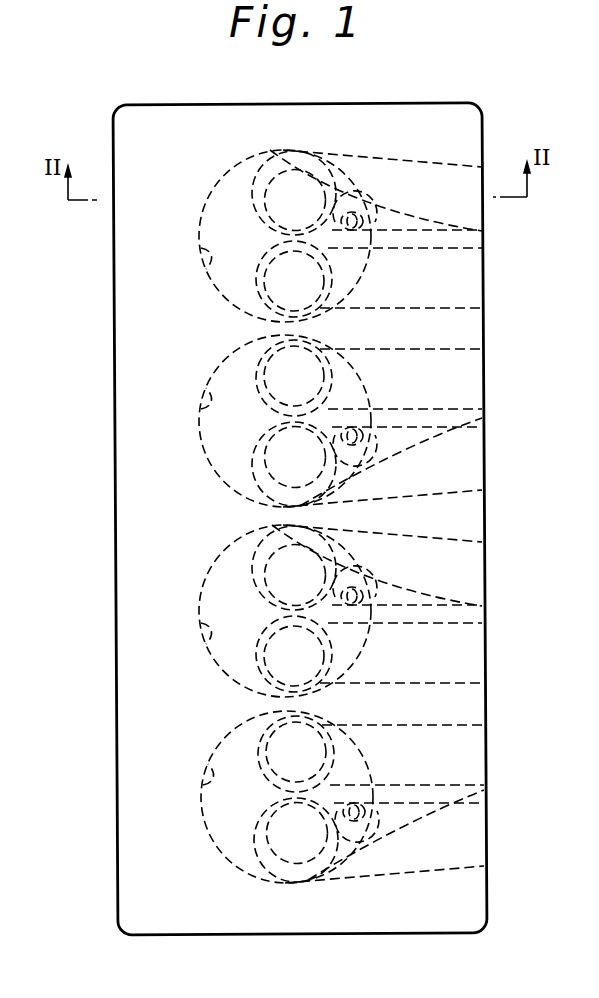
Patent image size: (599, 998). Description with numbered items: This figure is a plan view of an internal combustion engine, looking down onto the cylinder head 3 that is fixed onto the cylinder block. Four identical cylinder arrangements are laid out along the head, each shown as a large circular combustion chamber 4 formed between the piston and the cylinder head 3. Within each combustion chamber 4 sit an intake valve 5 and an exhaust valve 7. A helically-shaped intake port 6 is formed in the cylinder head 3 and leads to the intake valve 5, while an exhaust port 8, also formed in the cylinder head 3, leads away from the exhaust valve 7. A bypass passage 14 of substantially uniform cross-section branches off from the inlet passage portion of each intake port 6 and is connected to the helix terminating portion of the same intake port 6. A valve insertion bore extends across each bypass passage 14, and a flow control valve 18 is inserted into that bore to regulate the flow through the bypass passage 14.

The cylinder head 3 is at (156, 106).
The combustion chamber 4 is at (201, 250).
The intake valve 5 is at (268, 188).
The helically-shaped intake port 6 is at (417, 164).
The exhaust valve 7 is at (262, 290).
The exhaust port 8 is at (392, 308).
The bypass passage 14 is at (390, 231).
The flow control valve 18 is at (372, 207).